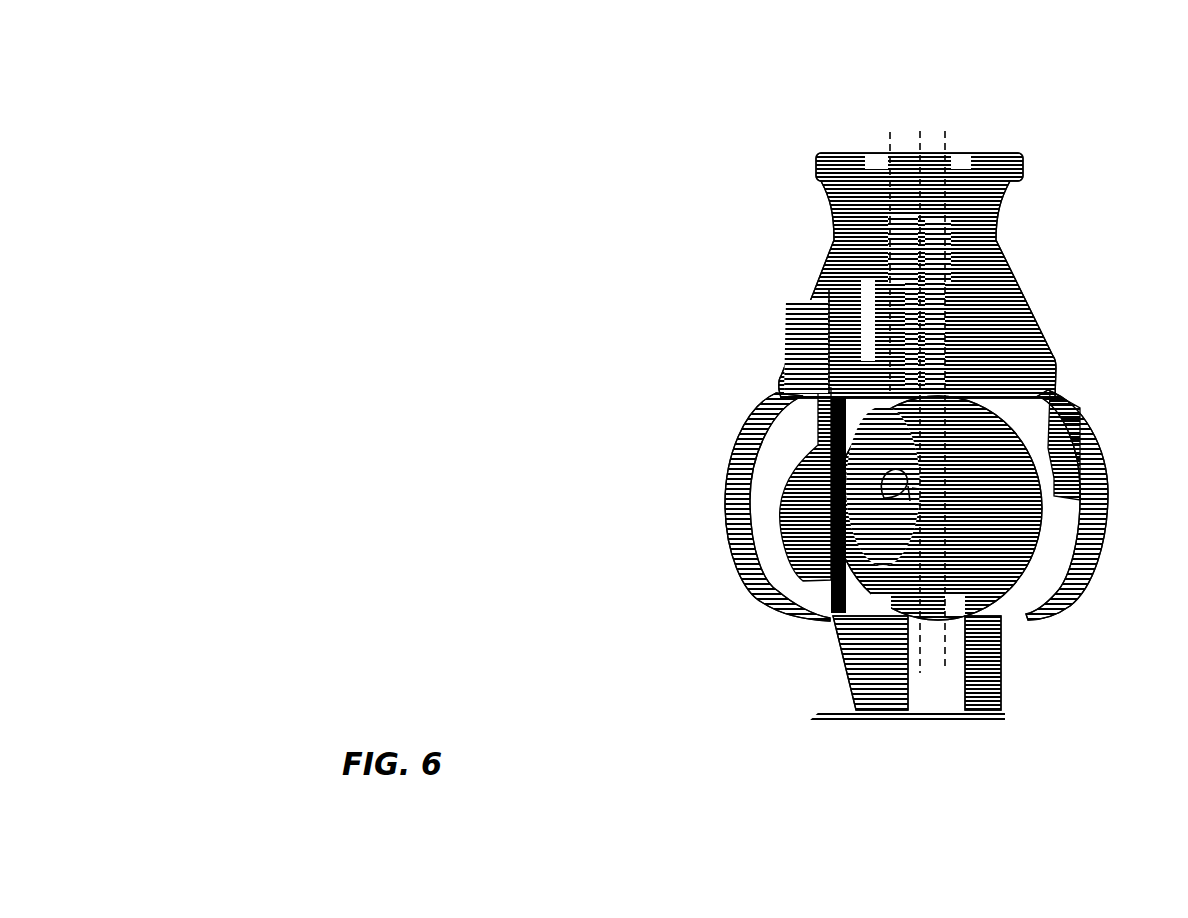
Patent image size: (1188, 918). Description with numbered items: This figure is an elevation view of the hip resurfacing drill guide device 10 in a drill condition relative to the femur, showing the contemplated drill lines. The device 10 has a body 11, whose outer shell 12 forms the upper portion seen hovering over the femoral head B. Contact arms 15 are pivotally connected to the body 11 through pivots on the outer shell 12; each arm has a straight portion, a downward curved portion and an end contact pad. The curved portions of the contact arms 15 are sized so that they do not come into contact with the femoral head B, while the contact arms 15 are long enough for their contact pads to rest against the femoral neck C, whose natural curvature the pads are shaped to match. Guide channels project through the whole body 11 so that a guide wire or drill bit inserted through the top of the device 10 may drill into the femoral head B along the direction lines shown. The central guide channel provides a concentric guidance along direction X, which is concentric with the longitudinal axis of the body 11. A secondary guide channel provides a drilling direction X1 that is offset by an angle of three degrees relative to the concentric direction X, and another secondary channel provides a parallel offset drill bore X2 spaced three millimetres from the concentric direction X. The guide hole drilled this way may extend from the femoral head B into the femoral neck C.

The hip resurfacing drill guide device 10 is at (1074, 146).
The body 11 is at (1022, 254).
The outer shell 12 is at (985, 217).
The contact arms 15 is at (1103, 547).
The femoral head B is at (1033, 497).
The femoral neck C is at (990, 658).
The concentric guide direction X is at (908, 124).
The angularly offset guide direction X1 is at (876, 130).
The parallel offset drill bore direction X2 is at (938, 128).